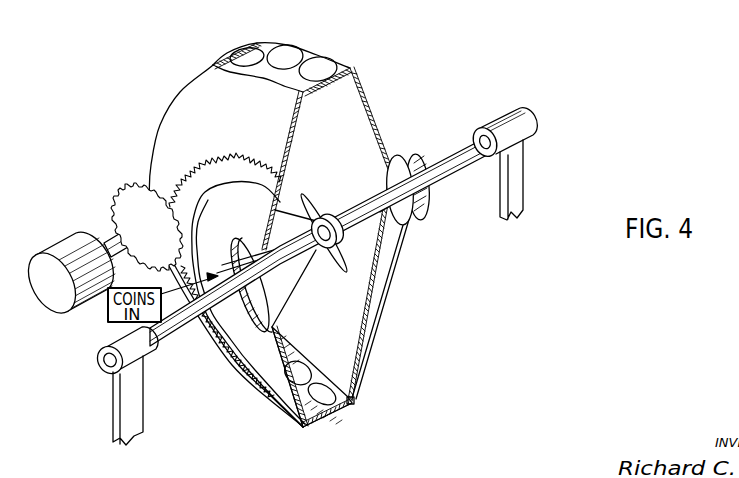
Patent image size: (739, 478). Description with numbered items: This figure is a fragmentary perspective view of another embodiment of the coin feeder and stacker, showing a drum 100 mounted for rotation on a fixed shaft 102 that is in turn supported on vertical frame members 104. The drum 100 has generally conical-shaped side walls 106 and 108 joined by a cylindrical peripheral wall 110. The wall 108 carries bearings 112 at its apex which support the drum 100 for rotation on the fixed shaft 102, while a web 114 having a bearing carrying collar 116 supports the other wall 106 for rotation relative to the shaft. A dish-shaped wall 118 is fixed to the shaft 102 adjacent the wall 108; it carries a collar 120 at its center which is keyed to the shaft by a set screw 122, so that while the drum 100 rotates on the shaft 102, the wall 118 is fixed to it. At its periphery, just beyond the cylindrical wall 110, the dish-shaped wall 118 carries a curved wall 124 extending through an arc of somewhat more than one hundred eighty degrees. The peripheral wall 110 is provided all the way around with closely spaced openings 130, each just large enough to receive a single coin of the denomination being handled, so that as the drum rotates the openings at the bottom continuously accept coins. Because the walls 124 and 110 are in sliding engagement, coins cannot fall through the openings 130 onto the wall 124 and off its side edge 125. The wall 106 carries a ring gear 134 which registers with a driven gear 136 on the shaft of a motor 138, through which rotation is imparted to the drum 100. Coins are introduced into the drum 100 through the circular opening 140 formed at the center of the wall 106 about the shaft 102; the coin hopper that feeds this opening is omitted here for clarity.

The drum 100 is at (356, 311).
The fixed shaft 102 is at (370, 210).
The vertical frame members 104 is at (524, 167).
The conical-shaped side wall 106 is at (277, 397).
The conical-shaped side wall 108 is at (377, 123).
The cylindrical peripheral wall 110 is at (270, 44).
The bearings 112 is at (387, 216).
The web 114 is at (305, 210).
The bearing carrying collar 116 is at (324, 216).
The dish-shaped wall 118 is at (402, 257).
The collar 120 is at (404, 156).
The set screw 122 is at (424, 160).
The curved wall 124 is at (350, 404).
The side edge 125 is at (293, 425).
The openings 130 is at (318, 66).
The ring gear 134 is at (247, 159).
The driven gear 136 is at (127, 197).
The motor 138 is at (73, 250).
The circular opening 140 is at (235, 327).